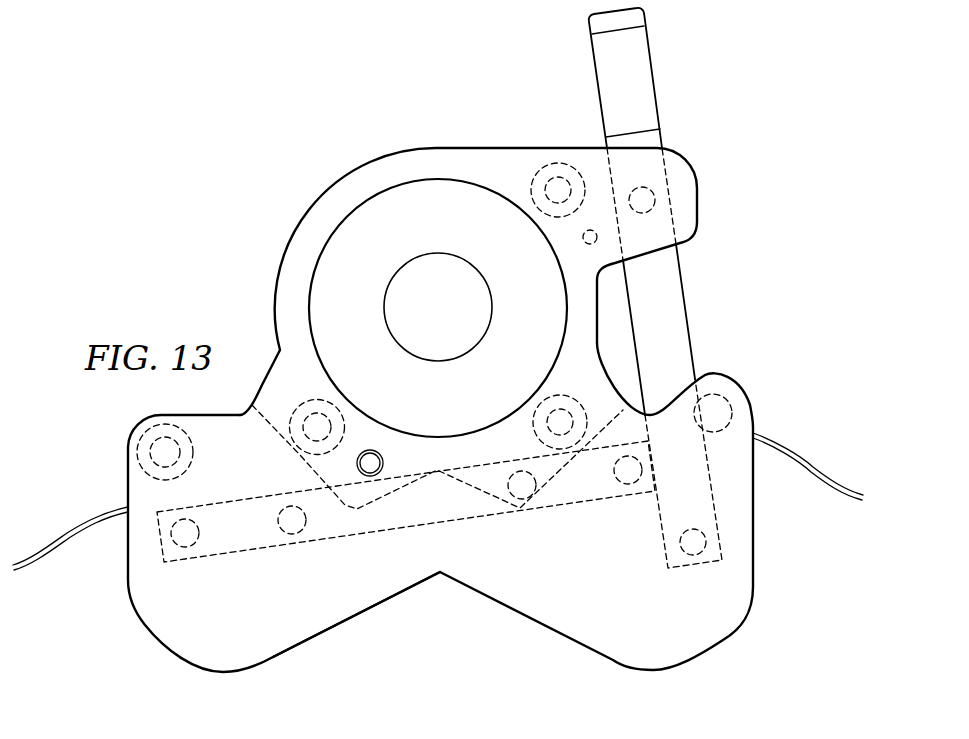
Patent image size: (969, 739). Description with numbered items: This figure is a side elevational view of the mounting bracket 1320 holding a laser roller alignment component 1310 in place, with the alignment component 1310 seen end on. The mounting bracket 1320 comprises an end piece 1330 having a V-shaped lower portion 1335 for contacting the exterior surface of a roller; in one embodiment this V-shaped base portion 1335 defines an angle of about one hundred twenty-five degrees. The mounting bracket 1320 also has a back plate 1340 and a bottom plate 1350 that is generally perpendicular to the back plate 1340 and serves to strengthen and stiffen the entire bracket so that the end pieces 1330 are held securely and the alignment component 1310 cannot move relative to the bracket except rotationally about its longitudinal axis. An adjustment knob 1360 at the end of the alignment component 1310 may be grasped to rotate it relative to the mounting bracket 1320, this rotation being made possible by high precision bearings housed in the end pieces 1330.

The laser roller alignment component 1310 is at (358, 128).
The mounting bracket 1320 is at (748, 90).
The end piece 1330 is at (155, 632).
The V-shaped lower portion 1335 is at (350, 618).
The back plate 1340 is at (596, 81).
The bottom plate 1350 is at (240, 497).
The adjustment knob 1360 is at (332, 253).